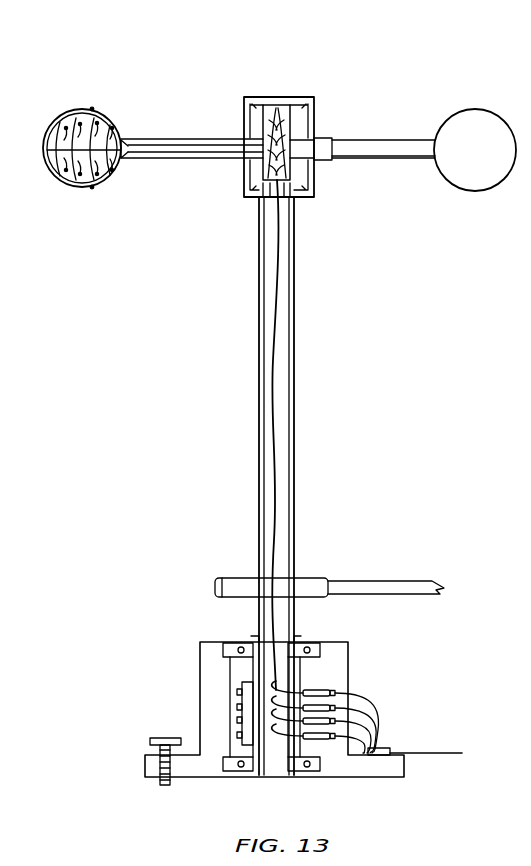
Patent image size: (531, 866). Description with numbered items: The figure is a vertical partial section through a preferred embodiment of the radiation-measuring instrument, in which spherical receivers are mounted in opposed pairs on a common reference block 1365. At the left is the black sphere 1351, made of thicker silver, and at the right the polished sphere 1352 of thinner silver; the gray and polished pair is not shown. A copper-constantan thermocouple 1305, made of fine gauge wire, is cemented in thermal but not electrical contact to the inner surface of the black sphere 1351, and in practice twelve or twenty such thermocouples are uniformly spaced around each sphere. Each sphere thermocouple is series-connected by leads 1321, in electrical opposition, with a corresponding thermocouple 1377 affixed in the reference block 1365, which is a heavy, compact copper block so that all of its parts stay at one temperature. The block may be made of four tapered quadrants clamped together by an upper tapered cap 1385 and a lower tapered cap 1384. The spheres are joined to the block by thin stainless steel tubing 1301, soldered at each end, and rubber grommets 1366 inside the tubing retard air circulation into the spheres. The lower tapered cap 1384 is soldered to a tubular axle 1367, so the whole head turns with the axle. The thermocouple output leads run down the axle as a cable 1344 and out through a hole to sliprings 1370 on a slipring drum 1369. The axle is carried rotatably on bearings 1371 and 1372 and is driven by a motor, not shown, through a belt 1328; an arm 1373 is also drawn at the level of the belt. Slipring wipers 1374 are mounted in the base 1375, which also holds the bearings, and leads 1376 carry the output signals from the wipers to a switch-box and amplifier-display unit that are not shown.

The tubing 1301 is at (156, 138).
The thermocouple 1305 is at (92, 108).
The leads 1321 is at (88, 122).
The belt 1328 is at (420, 578).
The cable 1344 is at (277, 455).
The black sphere 1351 is at (85, 186).
The polished sphere 1352 is at (477, 108).
The reference block 1365 is at (393, 124).
The rubber grommets 1366 is at (128, 154).
The tubular axle 1367 is at (296, 302).
The slipring drum 1369 is at (248, 688).
The sliprings 1370 is at (237, 704).
The bearing 1371 is at (316, 642).
The bearing 1372 is at (298, 777).
The cross bar 1373 is at (308, 578).
The slipring wipers 1374 is at (330, 693).
The base 1375 is at (398, 778).
The leads 1376 is at (426, 752).
The thermocouple 1377 is at (287, 107).
The lower tapered cap 1384 is at (312, 197).
The upper tapered cap 1385 is at (254, 97).